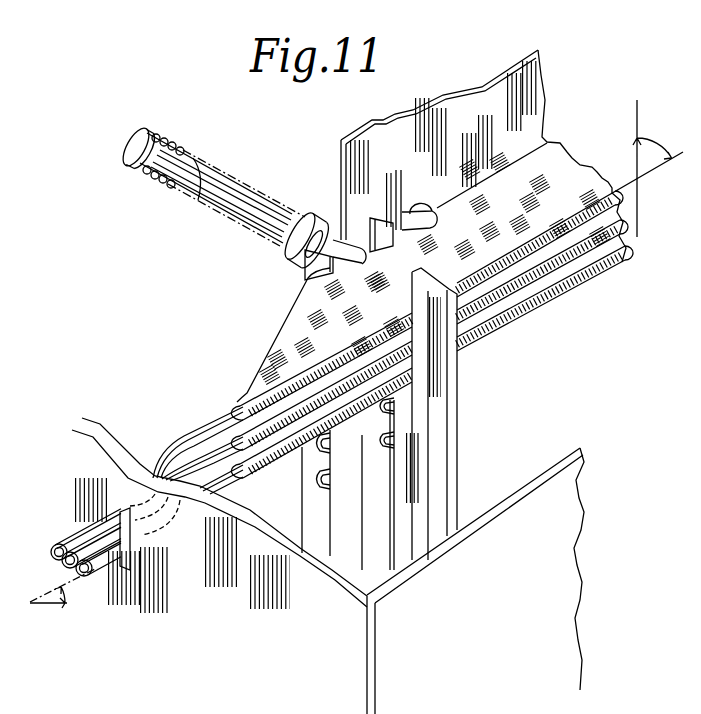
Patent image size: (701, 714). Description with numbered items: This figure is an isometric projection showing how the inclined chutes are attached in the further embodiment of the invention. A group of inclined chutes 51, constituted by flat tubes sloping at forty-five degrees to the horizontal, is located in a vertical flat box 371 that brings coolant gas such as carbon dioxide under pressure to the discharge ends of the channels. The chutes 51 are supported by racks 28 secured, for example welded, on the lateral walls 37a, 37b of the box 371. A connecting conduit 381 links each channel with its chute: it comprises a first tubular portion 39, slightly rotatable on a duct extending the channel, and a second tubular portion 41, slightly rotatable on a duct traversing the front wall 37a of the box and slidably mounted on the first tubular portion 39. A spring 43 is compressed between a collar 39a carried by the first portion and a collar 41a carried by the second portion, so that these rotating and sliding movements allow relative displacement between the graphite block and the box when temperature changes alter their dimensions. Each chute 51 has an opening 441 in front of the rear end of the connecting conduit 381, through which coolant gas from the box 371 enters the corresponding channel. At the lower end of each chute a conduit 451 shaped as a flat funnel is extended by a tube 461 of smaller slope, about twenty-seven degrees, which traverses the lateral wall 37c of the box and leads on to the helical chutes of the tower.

The front wall 37a is at (520, 104).
The inclined chutes 51 is at (576, 168).
The conduit 451 is at (320, 338).
The racks 28 is at (448, 374).
The vertical flat box 371 is at (507, 425).
The lateral wall 37b is at (574, 514).
The lateral wall 37c is at (350, 622).
The tube 461 is at (237, 483).
The first tubular portion 39 is at (190, 170).
The collar 39a is at (141, 132).
The spring 43 is at (178, 147).
The connecting conduit 381 is at (235, 164).
The second tubular portion 41 is at (246, 195).
The collar 41a is at (302, 222).
The opening 441 is at (369, 255).